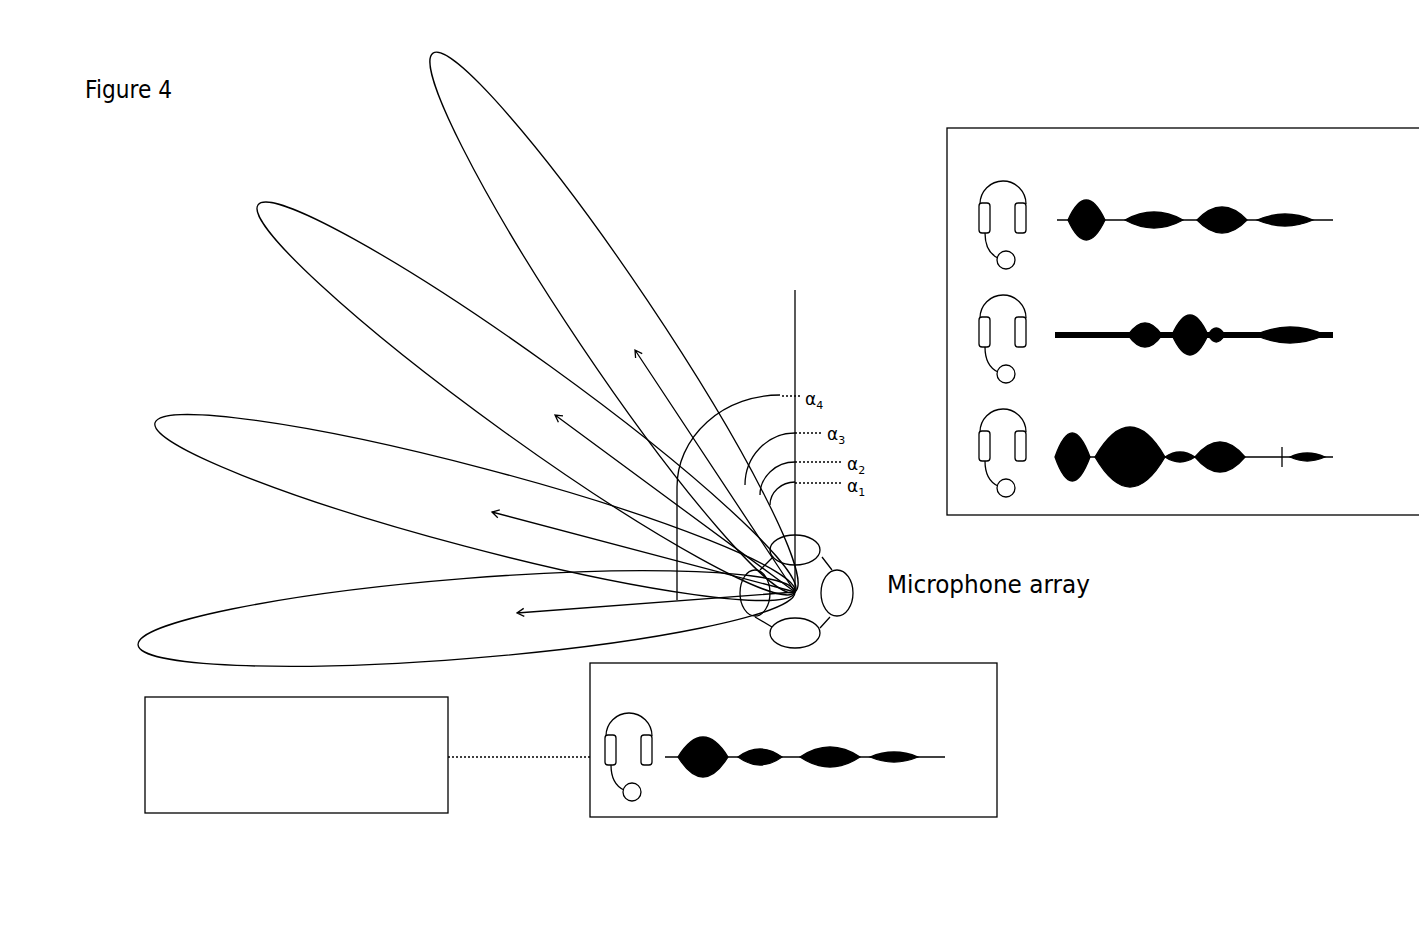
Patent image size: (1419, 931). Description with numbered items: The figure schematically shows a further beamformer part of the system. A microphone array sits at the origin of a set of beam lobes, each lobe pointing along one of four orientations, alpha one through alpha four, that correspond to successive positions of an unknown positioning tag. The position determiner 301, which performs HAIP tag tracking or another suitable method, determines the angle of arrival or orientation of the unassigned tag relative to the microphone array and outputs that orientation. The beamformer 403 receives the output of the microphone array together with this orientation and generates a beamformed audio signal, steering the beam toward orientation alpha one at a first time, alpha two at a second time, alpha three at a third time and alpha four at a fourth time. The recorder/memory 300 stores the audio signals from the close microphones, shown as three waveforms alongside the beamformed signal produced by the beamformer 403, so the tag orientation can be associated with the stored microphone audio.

The recorder/memory 300 is at (1183, 321).
The beamformer 403 is at (793, 740).
The position determiner 301 is at (367, 755).